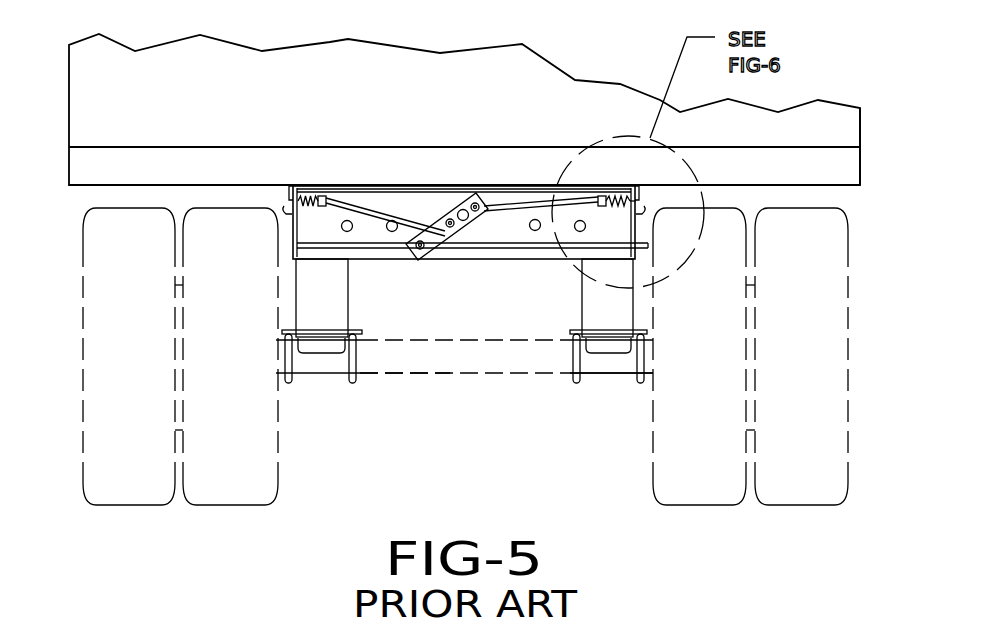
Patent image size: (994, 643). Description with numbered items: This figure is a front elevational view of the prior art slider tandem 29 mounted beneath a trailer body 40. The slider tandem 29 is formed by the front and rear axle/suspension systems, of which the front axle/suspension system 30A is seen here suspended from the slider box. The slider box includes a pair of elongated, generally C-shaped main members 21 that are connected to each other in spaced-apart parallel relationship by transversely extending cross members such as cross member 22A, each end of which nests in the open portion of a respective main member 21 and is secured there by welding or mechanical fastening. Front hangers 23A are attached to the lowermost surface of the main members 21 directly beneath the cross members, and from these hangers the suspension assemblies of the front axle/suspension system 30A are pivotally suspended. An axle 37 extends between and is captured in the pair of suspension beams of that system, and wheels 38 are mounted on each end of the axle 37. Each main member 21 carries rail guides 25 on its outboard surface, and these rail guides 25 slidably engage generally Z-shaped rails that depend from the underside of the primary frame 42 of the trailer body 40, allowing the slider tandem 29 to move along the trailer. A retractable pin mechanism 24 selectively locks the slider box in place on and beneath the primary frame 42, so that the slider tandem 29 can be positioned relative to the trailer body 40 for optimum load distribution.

The trailer body 40 is at (68, 104).
The primary frame 42 is at (862, 163).
The main member 21 is at (620, 231).
The cross member 22A is at (381, 253).
The front hanger 23A is at (314, 324).
The retractable pin mechanism 24 is at (486, 194).
The rail guide 25 is at (282, 211).
The slider tandem 29 is at (571, 407).
The front axle/suspension system 30A is at (442, 376).
The axle 37 is at (517, 354).
The wheels 38 is at (150, 358).